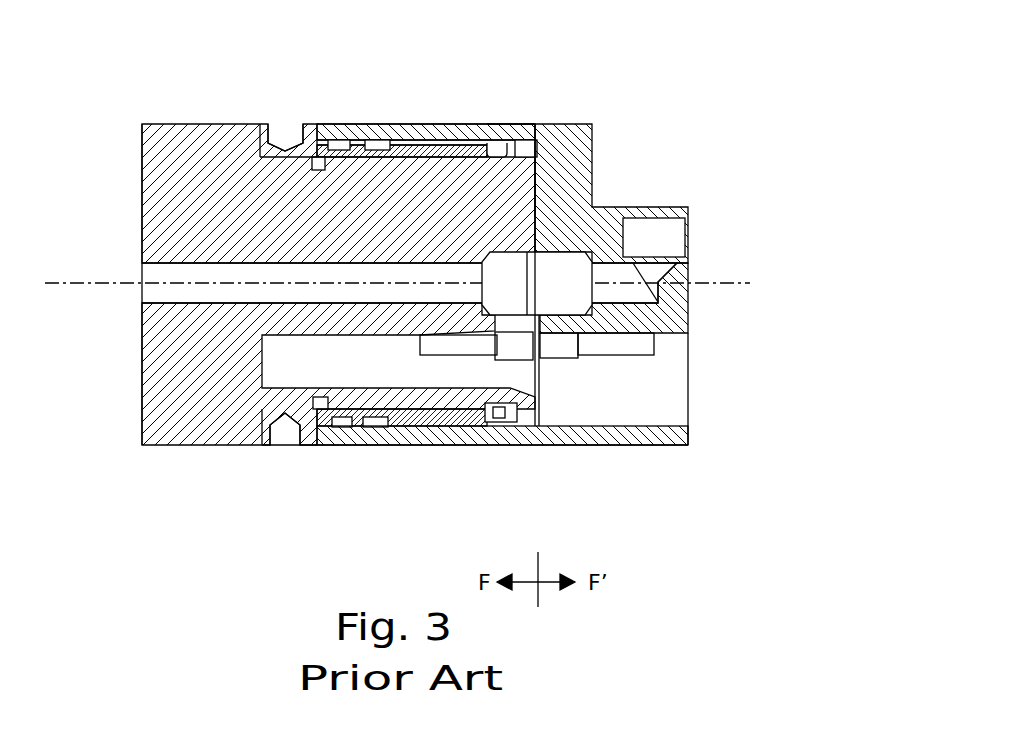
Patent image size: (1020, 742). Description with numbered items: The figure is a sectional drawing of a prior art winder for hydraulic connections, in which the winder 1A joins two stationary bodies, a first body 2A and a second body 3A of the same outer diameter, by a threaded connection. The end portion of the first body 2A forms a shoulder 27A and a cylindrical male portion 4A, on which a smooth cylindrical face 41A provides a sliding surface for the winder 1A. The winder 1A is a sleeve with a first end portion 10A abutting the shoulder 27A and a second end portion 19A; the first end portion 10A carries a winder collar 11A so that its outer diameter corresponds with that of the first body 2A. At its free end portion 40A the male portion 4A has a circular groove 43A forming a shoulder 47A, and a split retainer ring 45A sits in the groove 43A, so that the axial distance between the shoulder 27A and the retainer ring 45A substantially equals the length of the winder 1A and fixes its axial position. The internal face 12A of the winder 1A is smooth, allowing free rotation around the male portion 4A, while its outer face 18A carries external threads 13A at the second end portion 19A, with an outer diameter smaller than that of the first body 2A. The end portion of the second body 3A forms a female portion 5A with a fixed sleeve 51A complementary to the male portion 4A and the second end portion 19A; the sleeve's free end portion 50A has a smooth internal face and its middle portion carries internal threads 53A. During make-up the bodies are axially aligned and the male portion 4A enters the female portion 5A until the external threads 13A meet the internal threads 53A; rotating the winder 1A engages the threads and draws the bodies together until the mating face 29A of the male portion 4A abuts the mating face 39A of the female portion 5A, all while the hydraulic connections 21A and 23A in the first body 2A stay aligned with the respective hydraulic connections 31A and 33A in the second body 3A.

The winder 1A is at (338, 418).
The first body 2A is at (220, 158).
The second body 3A is at (550, 150).
The cylindrical male portion 4A is at (328, 105).
The female portion 5A is at (505, 113).
The first end portion 10A is at (265, 447).
The winder collar 11A is at (303, 447).
The internal face 12A is at (423, 376).
The external threads 13A is at (467, 130).
The outer face 18A is at (418, 124).
The second end portion 19A is at (463, 426).
The hydraulic connection 21A is at (183, 293).
The hydraulic connection 23A is at (288, 362).
The shoulder 27A is at (263, 125).
The mating face 29A is at (538, 188).
The hydraulic connection 31A is at (565, 285).
The hydraulic connection 33A is at (545, 377).
The mating face 39A is at (538, 202).
The free end portion 40A is at (538, 172).
The cylindrical face 41A is at (312, 130).
The circular groove 43A is at (527, 150).
The split retainer ring 45A is at (500, 140).
The shoulder 47A is at (538, 158).
The free end portion 50A is at (310, 447).
The fixed sleeve 51A is at (462, 426).
The internal threads 53A is at (433, 140).